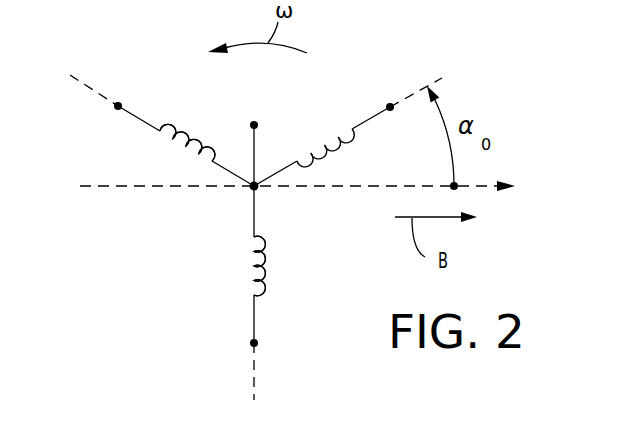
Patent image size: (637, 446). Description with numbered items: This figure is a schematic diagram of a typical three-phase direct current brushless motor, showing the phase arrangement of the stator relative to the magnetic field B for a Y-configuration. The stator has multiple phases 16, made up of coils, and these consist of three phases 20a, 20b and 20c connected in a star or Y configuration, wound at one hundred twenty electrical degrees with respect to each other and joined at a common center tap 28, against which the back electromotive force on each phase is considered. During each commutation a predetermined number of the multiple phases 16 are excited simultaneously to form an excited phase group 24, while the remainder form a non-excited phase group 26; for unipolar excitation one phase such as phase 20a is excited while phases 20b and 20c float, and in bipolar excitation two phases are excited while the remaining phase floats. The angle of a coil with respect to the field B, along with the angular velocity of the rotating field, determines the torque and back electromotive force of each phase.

The multiple phases 16 is at (199, 128).
The phase 20a is at (330, 134).
The phase 20b is at (177, 147).
The phase 20c is at (268, 246).
The excited phase group 24 is at (327, 160).
The non-excited phase group 26 is at (193, 153).
The center tap 28 is at (256, 122).